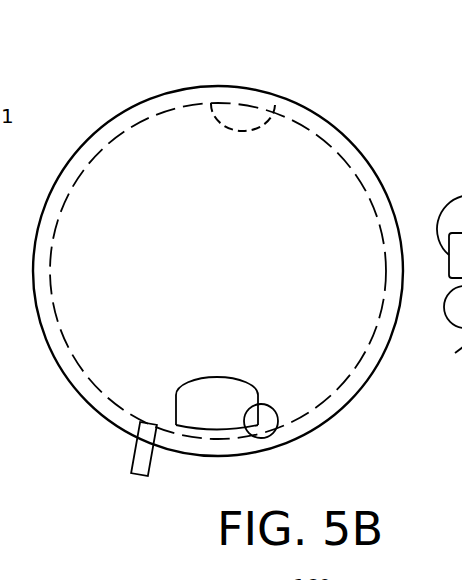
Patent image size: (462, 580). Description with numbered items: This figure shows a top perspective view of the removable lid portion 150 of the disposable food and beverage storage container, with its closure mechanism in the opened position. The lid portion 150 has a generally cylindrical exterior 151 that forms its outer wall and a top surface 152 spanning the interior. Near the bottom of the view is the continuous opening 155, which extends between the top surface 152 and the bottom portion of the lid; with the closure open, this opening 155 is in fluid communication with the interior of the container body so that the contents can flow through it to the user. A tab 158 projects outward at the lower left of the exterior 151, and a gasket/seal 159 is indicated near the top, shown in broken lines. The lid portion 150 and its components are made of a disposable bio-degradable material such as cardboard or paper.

The removable lid portion 150 is at (349, 125).
The generally cylindrical exterior 151 is at (372, 166).
The top surface 152 is at (232, 245).
The continuous opening 155 is at (272, 436).
The tab 158 is at (138, 474).
The gasket/seal 159 is at (275, 105).